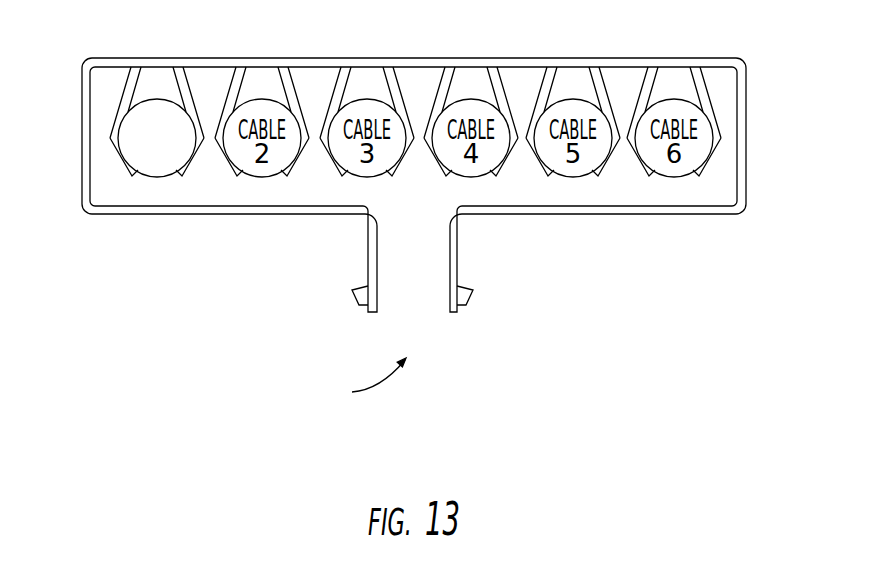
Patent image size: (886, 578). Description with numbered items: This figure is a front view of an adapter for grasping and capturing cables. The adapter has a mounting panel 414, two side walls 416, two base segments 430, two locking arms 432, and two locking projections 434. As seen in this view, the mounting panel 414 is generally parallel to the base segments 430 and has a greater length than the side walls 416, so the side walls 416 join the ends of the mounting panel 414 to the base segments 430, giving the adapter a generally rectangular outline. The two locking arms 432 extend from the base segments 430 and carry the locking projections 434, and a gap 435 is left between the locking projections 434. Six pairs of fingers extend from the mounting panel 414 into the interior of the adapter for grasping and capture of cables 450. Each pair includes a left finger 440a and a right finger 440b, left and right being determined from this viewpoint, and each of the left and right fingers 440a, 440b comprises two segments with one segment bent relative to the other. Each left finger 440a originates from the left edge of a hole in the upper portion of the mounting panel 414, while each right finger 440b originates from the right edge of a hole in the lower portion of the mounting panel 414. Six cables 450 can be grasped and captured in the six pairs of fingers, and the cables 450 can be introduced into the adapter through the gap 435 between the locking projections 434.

The mounting panel 414 is at (727, 57).
The side walls 416 is at (82, 176).
The base segments 430 is at (168, 216).
The locking arms 432 is at (368, 258).
The locking projections 434 is at (352, 302).
The gap 435 is at (362, 381).
The left finger 440a is at (125, 164).
The right finger 440b is at (188, 95).
The cable 450 is at (128, 118).